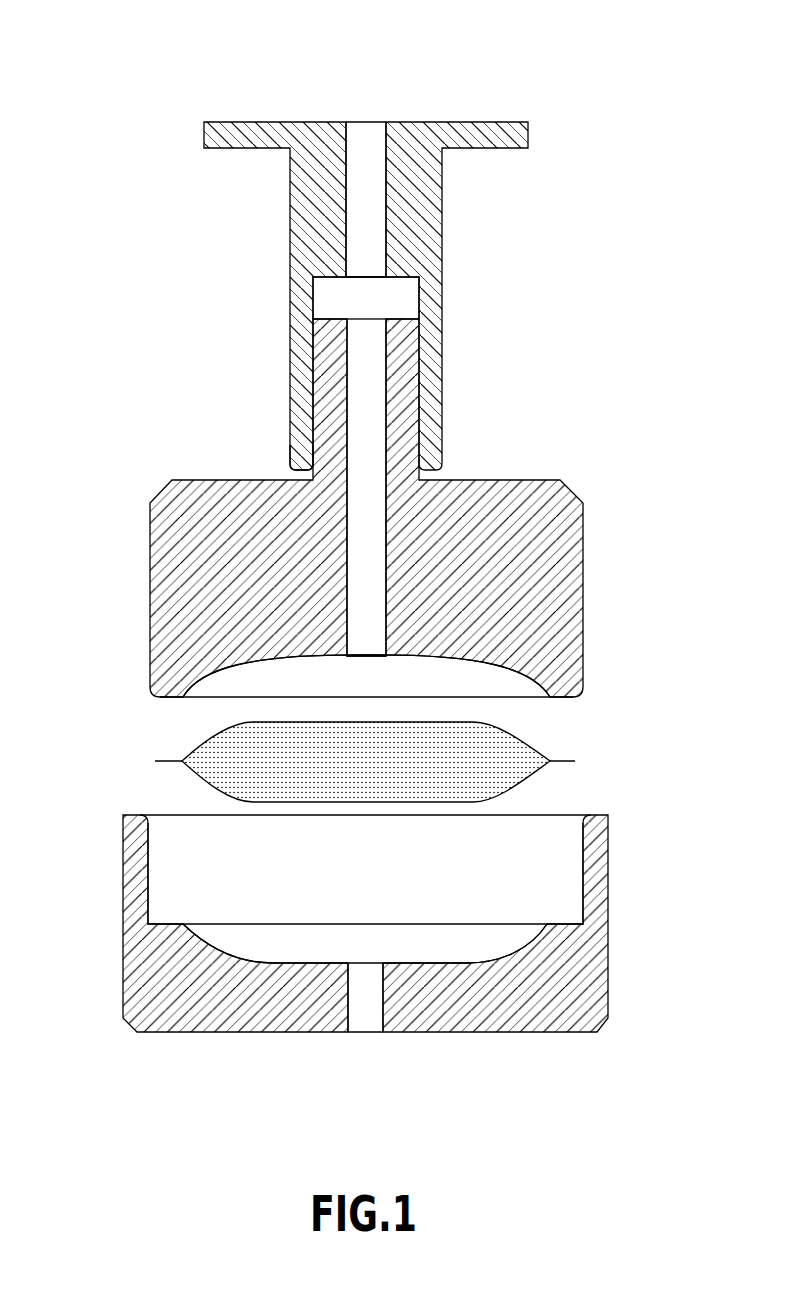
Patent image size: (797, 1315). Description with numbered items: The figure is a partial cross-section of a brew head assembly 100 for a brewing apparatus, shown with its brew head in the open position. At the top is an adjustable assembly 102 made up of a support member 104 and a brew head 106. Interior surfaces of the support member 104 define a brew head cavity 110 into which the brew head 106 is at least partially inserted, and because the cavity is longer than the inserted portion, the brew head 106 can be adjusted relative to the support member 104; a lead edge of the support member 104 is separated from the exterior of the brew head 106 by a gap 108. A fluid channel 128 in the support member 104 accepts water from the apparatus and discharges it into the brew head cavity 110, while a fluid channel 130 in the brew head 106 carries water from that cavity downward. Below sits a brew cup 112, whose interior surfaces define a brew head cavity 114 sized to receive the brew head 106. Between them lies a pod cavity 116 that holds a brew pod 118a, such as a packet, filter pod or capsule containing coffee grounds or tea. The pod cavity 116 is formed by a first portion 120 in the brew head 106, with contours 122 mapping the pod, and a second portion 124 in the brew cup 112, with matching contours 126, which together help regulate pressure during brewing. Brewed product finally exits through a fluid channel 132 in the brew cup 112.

The brew head assembly 100 is at (378, 538).
The adjustable assembly 102 is at (369, 406).
The support member 104 is at (366, 274).
The brew head 106 is at (369, 526).
The gap 108 is at (297, 473).
The brew head cavity 110 is at (322, 299).
The brew cup 112 is at (367, 927).
The brew head cavity 114 is at (163, 830).
The pod cavity 116 is at (378, 908).
The brew pod 118a is at (172, 760).
The first portion 120 is at (530, 690).
The contours 122 is at (197, 680).
The second portion 124 is at (520, 933).
The contours 126 is at (203, 942).
The fluid channel 128 is at (369, 128).
The fluid channel 130 is at (360, 423).
The fluid channel 132 is at (365, 1020).